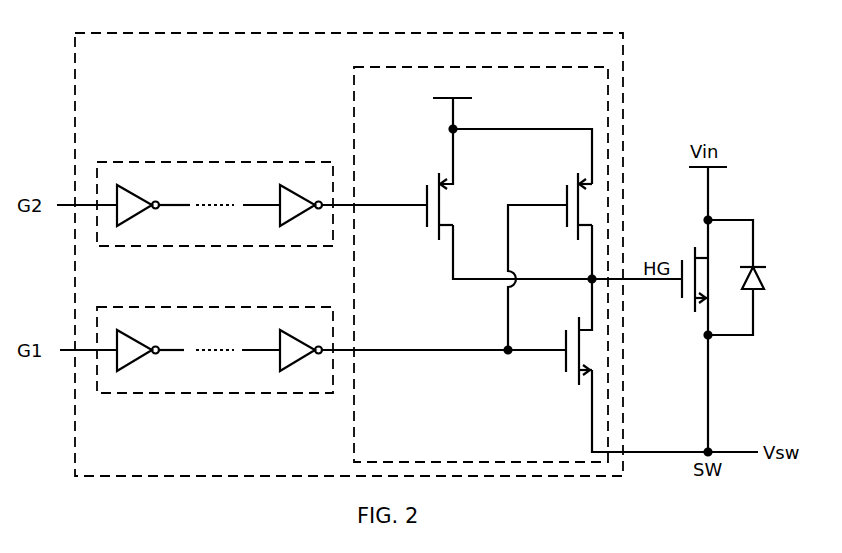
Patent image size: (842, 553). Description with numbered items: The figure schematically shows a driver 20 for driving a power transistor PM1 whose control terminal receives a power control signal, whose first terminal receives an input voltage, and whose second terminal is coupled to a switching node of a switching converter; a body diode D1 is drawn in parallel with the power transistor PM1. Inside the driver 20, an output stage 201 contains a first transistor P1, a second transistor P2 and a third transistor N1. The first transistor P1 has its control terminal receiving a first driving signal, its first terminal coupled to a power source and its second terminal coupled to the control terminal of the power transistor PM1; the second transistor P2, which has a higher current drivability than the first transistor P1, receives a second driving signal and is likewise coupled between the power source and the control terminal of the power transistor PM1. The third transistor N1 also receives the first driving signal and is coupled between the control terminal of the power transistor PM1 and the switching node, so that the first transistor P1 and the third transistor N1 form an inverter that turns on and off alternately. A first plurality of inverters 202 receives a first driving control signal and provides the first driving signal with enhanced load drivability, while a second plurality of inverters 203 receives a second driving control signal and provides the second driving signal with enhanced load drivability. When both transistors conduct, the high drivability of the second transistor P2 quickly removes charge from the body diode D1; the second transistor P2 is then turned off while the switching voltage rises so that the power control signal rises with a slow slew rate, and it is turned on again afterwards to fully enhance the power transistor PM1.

The driver 20 is at (349, 254).
The output stage / level shift circuit 201 is at (533, 252).
The first plurality of inverters 202 is at (206, 308).
The second plurality of inverters 203 is at (202, 163).
The first transistor P1 is at (576, 194).
The second transistor P2 is at (437, 194).
The third transistor N1 is at (574, 363).
The power transistor PM1 is at (696, 311).
The body diode D1 is at (754, 277).